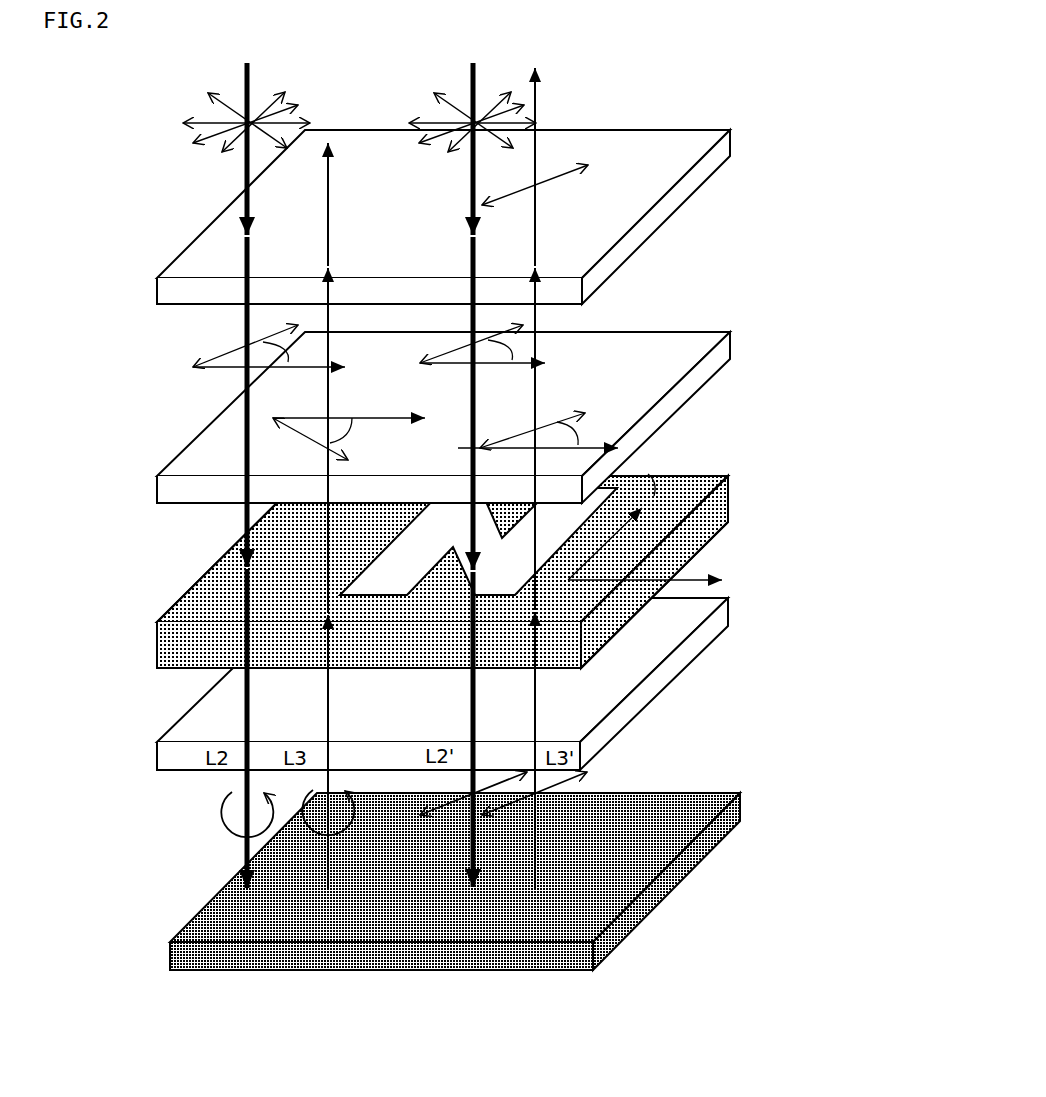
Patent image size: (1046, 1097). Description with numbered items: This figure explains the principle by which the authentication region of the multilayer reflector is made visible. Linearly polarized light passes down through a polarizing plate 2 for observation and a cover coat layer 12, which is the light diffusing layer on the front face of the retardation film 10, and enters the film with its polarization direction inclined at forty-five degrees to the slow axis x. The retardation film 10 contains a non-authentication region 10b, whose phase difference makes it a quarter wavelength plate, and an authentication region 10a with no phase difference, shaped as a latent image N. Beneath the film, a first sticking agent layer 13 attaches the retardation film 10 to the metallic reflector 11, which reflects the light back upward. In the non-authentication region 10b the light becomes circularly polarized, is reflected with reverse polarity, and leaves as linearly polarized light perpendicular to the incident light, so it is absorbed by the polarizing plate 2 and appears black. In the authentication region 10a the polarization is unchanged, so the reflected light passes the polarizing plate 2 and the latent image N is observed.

The polarizing plate 2 is at (663, 207).
The cover coat layer 12 is at (663, 407).
The retardation film 10 is at (458, 522).
The authentication region 10a is at (402, 560).
The non-authentication region 10b is at (205, 605).
The first sticking agent layer 13 is at (662, 672).
The metallic reflector 11 is at (660, 885).